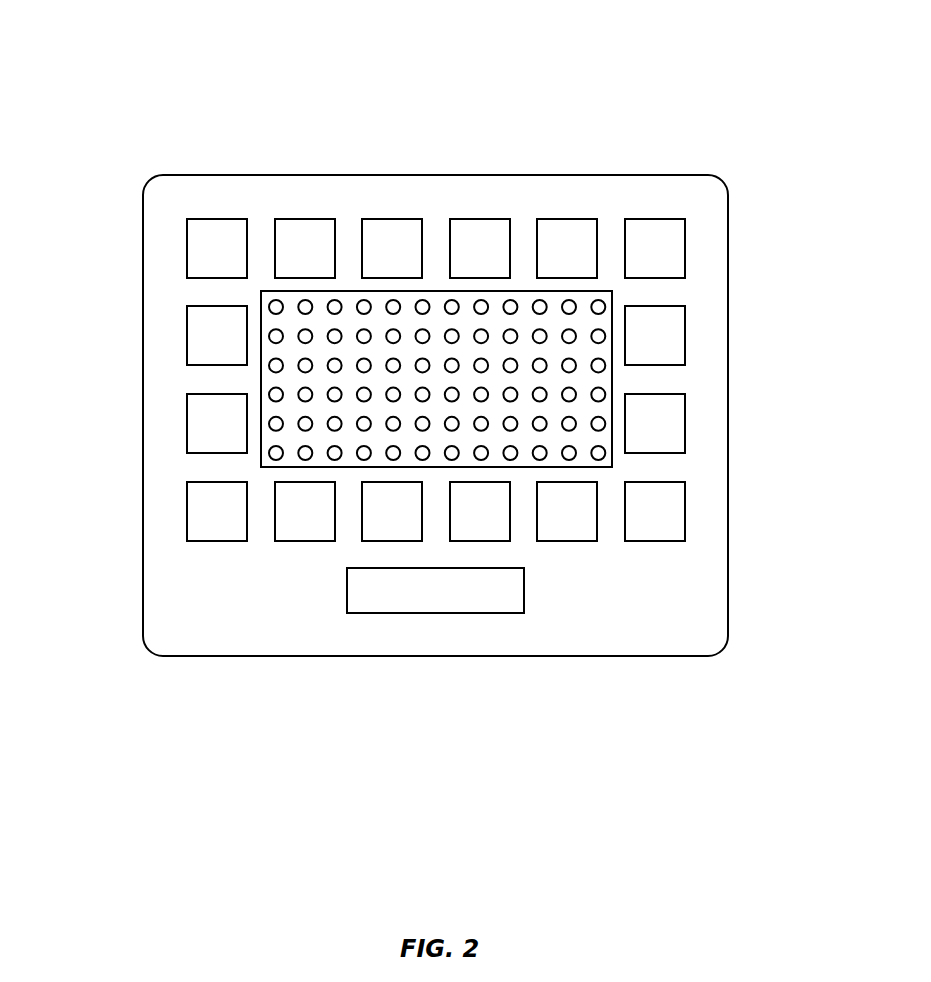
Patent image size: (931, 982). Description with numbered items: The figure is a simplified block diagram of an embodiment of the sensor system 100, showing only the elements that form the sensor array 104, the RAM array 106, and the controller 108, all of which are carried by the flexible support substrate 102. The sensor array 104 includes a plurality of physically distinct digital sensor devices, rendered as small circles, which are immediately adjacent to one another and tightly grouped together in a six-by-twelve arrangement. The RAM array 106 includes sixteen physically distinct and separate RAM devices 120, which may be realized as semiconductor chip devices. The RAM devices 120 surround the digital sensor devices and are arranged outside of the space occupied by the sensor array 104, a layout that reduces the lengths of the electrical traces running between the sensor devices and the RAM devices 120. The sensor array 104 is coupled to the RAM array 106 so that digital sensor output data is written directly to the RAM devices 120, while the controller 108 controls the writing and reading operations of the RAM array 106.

The sensor system 100 is at (306, 46).
The flexible support substrate 102 is at (266, 175).
The sensor array 104 is at (261, 381).
The RAM array 106 is at (700, 219).
The controller 108 is at (347, 597).
The RAM devices 120 is at (480, 219).